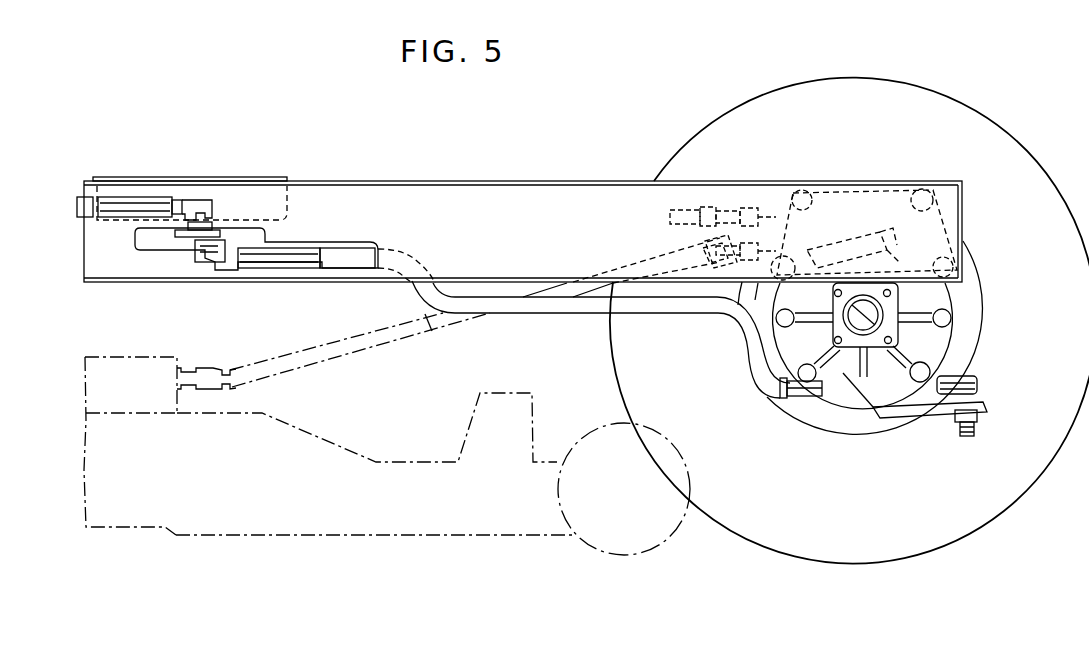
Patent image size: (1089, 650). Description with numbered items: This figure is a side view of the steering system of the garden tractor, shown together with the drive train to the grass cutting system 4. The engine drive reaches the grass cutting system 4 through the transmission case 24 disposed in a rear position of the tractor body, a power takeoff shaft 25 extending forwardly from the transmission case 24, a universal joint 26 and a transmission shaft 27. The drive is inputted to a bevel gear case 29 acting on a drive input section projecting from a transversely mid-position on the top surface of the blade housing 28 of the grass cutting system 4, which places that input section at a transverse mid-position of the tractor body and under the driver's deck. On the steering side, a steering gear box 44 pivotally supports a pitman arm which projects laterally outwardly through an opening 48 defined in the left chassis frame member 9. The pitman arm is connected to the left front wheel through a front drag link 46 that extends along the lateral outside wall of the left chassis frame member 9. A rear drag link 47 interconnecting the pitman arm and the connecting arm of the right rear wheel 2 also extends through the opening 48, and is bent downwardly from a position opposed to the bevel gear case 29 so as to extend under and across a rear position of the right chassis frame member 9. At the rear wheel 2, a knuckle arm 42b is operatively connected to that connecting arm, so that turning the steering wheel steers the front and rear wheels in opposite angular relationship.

The rear wheel 2 is at (787, 552).
The grass cutting system 4 is at (280, 537).
The chassis frame member 9 is at (760, 190).
The transmission case 24 is at (967, 227).
The power takeoff shaft 25 is at (762, 290).
The universal joint 26 is at (221, 362).
The transmission shaft 27 is at (467, 317).
The blade housing 28 is at (427, 520).
The bevel gear case 29 is at (132, 357).
The knuckle arm 42b is at (928, 425).
The steering gear box 44 is at (172, 177).
The front drag link 46 is at (80, 197).
The rear drag link 47 is at (522, 300).
The opening 48 is at (258, 228).